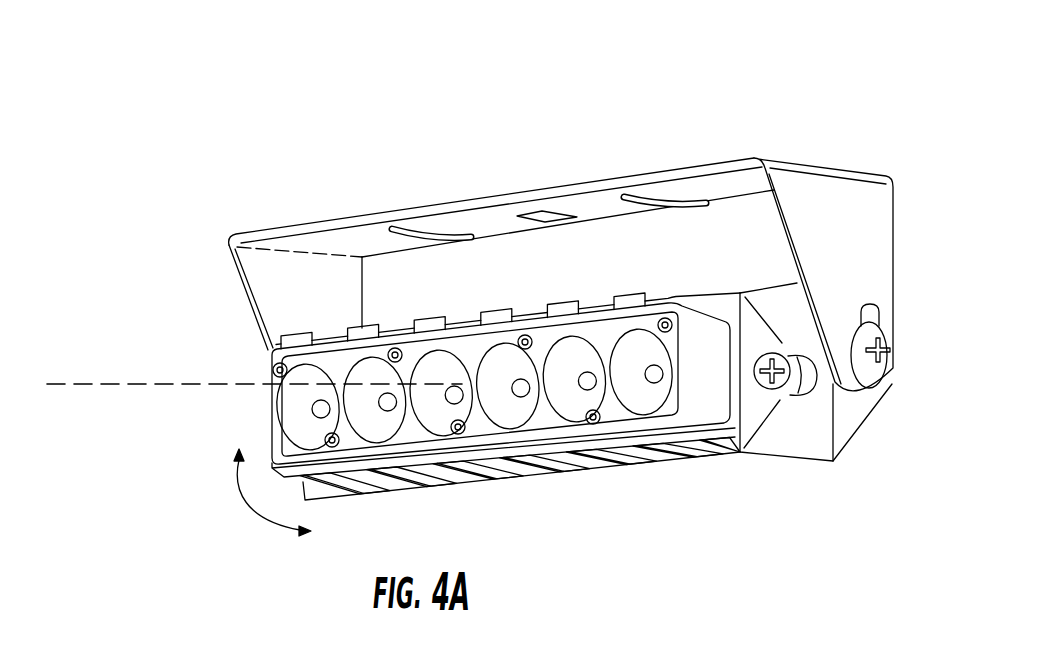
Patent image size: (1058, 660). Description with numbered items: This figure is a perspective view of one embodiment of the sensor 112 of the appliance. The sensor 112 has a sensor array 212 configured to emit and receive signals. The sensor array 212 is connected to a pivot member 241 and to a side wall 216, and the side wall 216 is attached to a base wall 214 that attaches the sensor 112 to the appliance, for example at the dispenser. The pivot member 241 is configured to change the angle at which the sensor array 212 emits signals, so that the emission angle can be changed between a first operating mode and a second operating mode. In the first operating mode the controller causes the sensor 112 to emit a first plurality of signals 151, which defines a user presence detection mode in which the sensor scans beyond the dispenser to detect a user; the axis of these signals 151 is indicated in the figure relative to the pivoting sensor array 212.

The sensor 112 is at (501, 300).
The base wall 214 is at (713, 167).
The side wall 216 is at (278, 283).
The pivot member 241 is at (889, 348).
The sensor array 212 is at (553, 400).
The first plurality of signals 151 is at (115, 385).